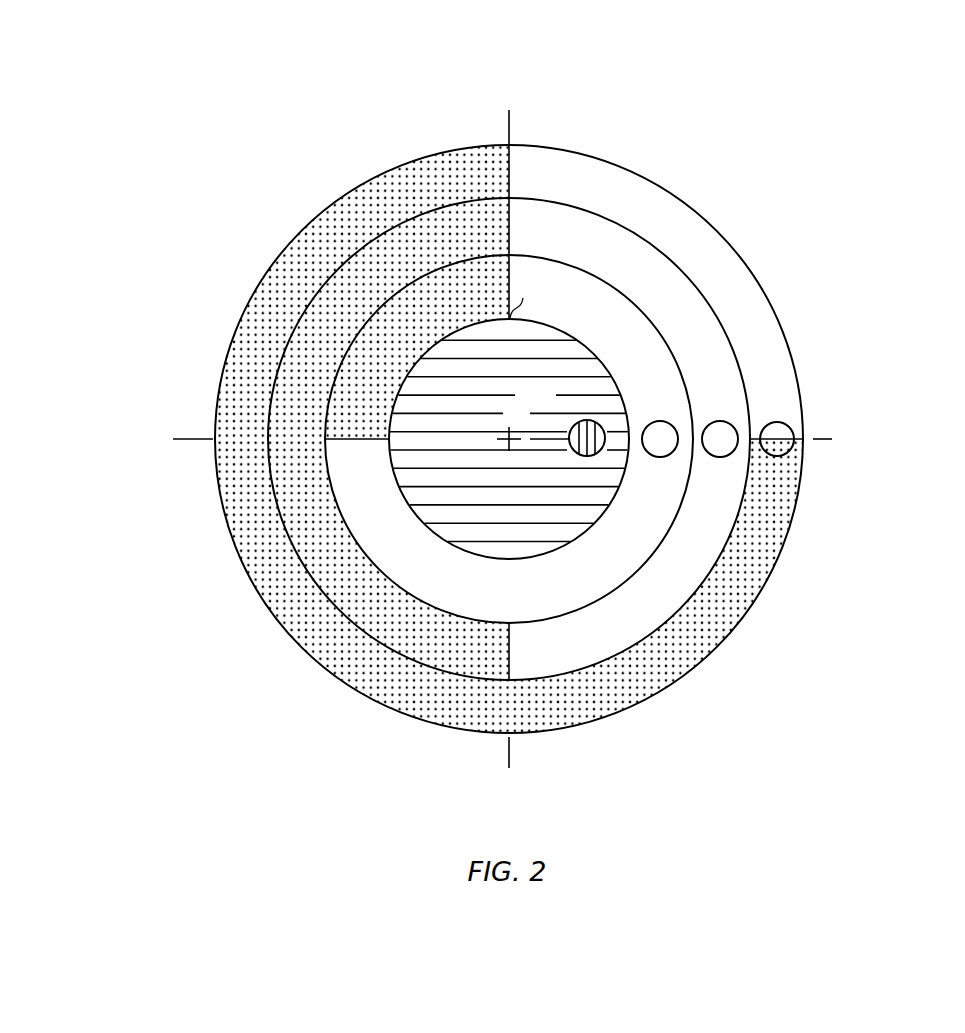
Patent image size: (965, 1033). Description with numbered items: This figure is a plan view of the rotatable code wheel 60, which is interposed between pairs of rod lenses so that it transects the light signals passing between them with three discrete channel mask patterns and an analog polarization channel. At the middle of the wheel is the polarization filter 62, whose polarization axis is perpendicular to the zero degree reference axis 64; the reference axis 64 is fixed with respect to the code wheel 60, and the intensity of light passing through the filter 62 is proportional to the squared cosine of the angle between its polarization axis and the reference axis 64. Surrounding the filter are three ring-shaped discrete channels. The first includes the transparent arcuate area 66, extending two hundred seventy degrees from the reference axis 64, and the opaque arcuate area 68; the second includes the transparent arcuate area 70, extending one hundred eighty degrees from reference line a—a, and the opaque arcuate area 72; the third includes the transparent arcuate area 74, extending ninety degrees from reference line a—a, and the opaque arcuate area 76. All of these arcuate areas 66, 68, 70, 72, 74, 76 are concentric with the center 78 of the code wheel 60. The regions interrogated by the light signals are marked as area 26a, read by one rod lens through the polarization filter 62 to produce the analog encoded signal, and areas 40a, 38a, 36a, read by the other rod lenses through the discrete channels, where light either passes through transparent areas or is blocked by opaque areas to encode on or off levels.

The code wheel 60 is at (222, 147).
The polarization filter 62 is at (540, 556).
The 0 degree reference axis 64 is at (510, 118).
The transparent arcuate area 66 is at (567, 324).
The opaque arcuate area 68 is at (409, 356).
The transparent arcuate area 70 is at (576, 258).
The opaque arcuate area 72 is at (393, 640).
The transparent arcuate area 74 is at (617, 218).
The opaque arcuate area 76 is at (364, 689).
The center 78 is at (510, 433).
The area 26a is at (600, 452).
The area 40a is at (650, 422).
The area 38a is at (720, 457).
The area 36a is at (768, 422).